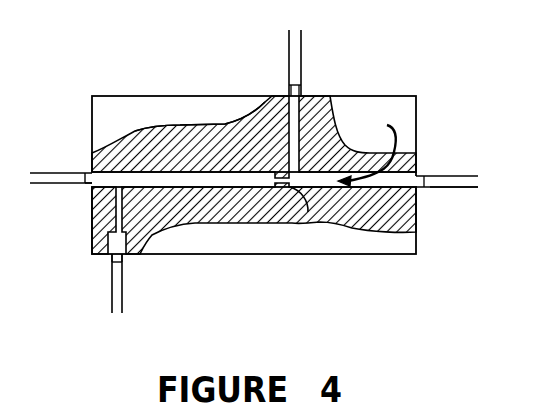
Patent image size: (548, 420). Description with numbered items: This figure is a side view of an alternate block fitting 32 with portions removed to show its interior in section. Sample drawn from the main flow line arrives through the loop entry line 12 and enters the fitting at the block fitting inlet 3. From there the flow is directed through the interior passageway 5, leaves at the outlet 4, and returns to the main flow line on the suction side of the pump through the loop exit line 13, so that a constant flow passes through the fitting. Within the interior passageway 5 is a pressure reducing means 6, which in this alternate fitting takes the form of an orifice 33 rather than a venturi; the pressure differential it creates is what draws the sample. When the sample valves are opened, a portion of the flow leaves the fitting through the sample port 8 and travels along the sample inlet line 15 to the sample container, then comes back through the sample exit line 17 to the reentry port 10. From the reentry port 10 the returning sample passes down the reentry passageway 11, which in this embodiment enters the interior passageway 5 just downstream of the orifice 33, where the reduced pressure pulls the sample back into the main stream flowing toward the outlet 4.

The block fitting inlet 3 is at (85, 184).
The outlet 4 is at (425, 175).
The interior passageway 5 is at (205, 182).
The pressure reducing means 6 is at (367, 150).
The sample port 8 is at (123, 257).
The reentry port 10 is at (305, 90).
The reentry passageway 11 is at (262, 94).
The loop entry line 12 is at (33, 173).
The loop exit line 13 is at (445, 188).
The sample inlet line 15 is at (112, 293).
The sample exit line 17 is at (302, 52).
The alternate block fitting 32 is at (392, 96).
The orifice 33 is at (302, 217).